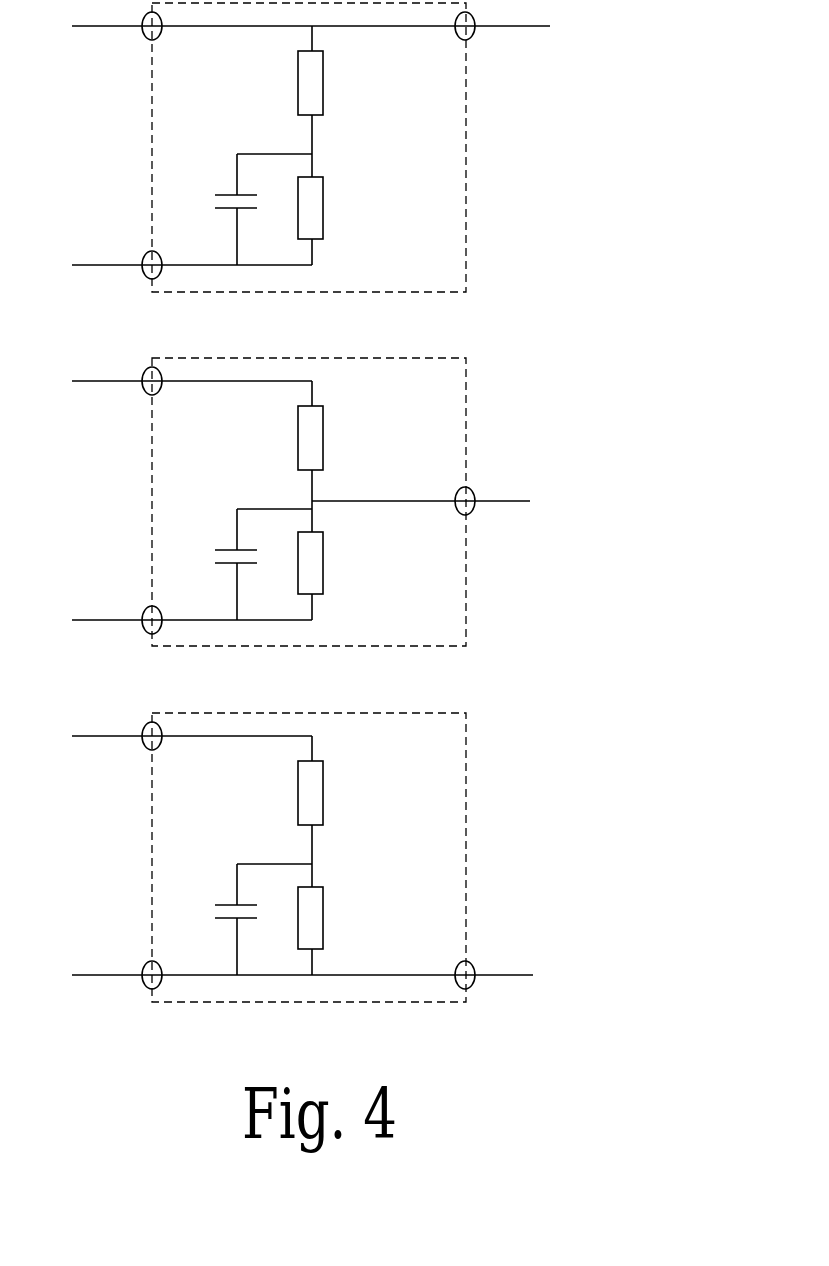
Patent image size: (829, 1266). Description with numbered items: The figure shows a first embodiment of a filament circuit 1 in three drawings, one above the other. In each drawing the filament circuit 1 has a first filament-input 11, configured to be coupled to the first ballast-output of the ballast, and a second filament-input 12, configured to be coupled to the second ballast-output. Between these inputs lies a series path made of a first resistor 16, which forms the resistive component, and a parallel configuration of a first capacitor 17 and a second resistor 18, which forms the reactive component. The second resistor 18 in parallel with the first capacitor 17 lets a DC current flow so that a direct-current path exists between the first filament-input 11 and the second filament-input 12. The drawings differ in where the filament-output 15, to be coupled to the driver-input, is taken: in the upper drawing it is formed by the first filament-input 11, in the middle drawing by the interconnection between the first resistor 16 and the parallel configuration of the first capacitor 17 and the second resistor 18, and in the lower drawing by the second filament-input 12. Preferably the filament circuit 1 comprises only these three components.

The filament circuit 1 is at (415, 1007).
The first filament-input 11 is at (145, 748).
The second filament-input 12 is at (146, 964).
The filament-output 15 is at (481, 996).
The first resistor 16 is at (333, 791).
The first capacitor 17 is at (229, 575).
The second resistor 18 is at (333, 918).